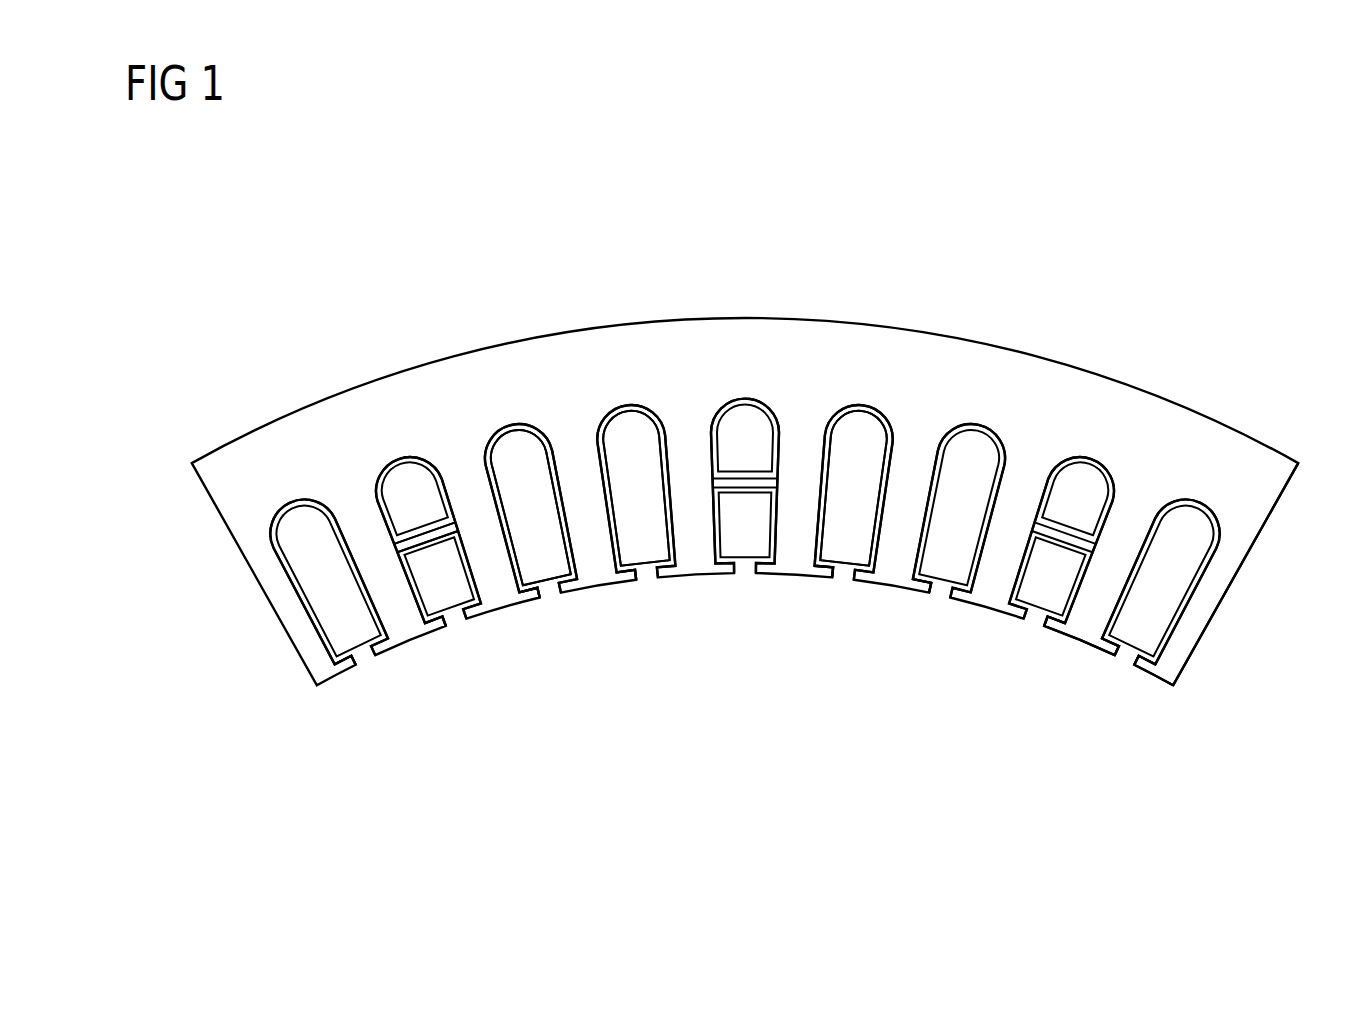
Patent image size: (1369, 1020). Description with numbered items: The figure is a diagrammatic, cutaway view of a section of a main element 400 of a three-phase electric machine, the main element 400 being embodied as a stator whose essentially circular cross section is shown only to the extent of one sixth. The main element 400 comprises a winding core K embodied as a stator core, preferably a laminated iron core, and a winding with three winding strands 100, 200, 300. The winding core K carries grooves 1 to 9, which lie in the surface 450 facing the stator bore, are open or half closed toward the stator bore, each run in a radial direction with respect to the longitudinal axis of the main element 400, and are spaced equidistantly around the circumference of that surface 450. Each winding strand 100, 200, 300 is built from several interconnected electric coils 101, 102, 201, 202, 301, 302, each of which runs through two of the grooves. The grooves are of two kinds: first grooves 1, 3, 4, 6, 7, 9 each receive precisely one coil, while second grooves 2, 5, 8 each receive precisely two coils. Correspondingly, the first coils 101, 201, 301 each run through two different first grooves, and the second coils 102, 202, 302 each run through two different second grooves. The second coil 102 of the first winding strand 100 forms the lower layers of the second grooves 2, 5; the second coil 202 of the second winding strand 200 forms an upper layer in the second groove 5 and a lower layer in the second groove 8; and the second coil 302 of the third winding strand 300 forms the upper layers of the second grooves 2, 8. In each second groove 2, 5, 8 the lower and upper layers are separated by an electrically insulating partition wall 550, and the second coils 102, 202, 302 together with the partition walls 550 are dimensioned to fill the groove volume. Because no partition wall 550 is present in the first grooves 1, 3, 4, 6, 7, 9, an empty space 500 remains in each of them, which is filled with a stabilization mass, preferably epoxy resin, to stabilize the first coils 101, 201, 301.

The first groove 1 is at (618, 401).
The second groove 2 is at (737, 398).
The first groove 3 is at (860, 400).
The first groove 4 is at (972, 422).
The second groove 5 is at (1087, 458).
The first groove 6 is at (1188, 500).
The first groove 7 is at (290, 503).
The second groove 8 is at (397, 460).
The first groove 9 is at (498, 425).
The first winding strand 100 is at (630, 437).
The first coil 101 is at (1190, 525).
The second coil 102 is at (1083, 483).
The second winding strand 200 is at (516, 455).
The first coil 201 is at (516, 455).
The second coil 202 is at (407, 483).
The third winding strand 300 is at (848, 530).
The first coil 301 is at (848, 530).
The second coil 302 is at (745, 528).
The main element 400 is at (255, 265).
The surface 450 is at (1087, 650).
The empty space 500 is at (312, 663).
The partition wall 550 is at (400, 546).
The winding core K is at (1266, 494).